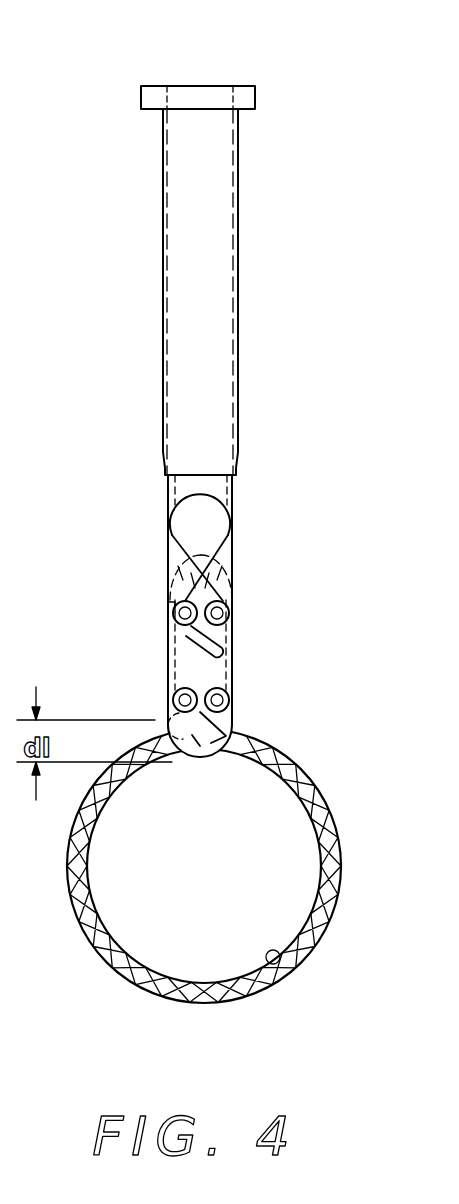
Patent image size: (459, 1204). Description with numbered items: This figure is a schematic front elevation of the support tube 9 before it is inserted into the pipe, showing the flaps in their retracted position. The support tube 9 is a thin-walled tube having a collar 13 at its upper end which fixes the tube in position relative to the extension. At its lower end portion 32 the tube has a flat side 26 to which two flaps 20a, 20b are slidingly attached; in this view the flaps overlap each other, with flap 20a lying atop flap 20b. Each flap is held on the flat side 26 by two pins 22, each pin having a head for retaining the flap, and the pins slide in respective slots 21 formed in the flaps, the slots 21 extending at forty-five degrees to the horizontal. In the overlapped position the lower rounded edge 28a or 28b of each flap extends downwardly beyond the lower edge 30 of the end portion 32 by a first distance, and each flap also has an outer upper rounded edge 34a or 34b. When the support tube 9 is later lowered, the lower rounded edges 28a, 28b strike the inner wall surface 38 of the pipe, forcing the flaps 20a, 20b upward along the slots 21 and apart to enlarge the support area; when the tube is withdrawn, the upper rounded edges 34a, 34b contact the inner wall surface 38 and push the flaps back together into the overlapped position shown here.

The support tube 9 is at (173, 283).
The collar 13 is at (153, 93).
The flap 20a is at (172, 665).
The flap 20b is at (232, 668).
The slot 21 is at (232, 637).
The pin 22 is at (229, 613).
The flat side 26 is at (229, 548).
The lower rounded edge 28a is at (183, 758).
The lower rounded edge 28b is at (233, 756).
The lower edge 30 is at (233, 718).
The end portion 32 is at (233, 486).
The upper rounded edge 34a is at (172, 570).
The upper rounded edge 34b is at (232, 558).
The inner wall surface 38 is at (285, 972).